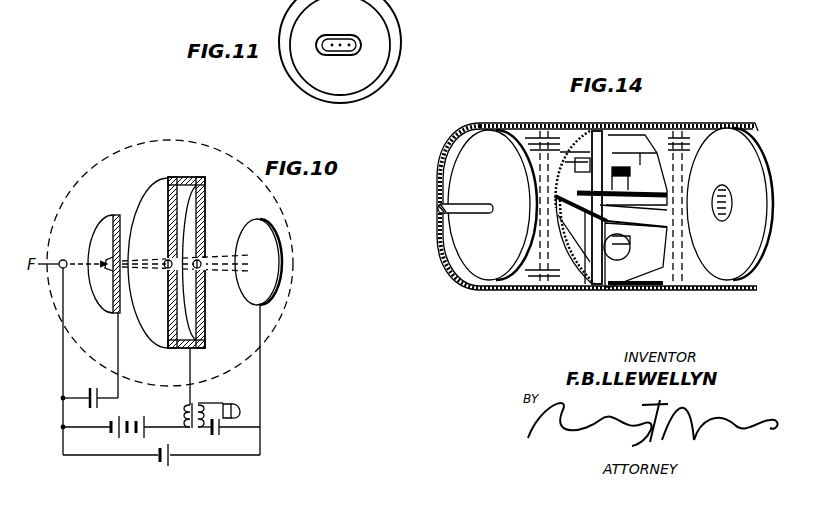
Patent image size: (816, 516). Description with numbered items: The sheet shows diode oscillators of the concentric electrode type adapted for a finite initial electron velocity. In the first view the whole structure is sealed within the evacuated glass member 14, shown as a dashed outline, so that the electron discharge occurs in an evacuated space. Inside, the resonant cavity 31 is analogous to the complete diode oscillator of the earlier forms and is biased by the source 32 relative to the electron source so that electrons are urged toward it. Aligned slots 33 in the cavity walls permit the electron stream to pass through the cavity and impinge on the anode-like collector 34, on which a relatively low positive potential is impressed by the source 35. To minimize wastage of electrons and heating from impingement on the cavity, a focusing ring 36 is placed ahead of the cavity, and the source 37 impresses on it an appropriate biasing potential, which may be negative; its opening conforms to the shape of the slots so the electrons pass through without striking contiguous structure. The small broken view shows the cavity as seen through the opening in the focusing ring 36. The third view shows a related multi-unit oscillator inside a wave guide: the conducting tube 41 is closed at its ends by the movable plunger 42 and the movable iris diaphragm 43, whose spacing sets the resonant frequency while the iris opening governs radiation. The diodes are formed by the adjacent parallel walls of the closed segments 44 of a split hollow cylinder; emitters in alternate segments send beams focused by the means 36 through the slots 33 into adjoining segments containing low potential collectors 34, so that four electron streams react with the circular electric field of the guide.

In FIG. 10, the evacuated glass member 14 is at (291, 283).
In FIG. 10, the resonant cavity 31 is at (205, 203).
In FIG. 10, the biasing source 32 is at (146, 426).
In FIG. 10, the aligned slots 33 is at (175, 268).
In FIG. 14, the aligned slots 33 is at (585, 188).
In FIG. 10, the anode-like collector 34 is at (252, 293).
In FIG. 14, the anode-like collector 34 is at (580, 215).
In FIG. 10, the collector potential source 35 is at (171, 449).
In FIG. 10, the focusing ring 36 is at (107, 228).
In FIG. 11, the focusing ring 36 is at (375, 25).
In FIG. 14, the focusing ring 36 is at (594, 131).
In FIG. 10, the focusing ring biasing source 37 is at (90, 408).
In FIG. 14, the conducting tube 41 is at (512, 128).
In FIG. 14, the movable plunger 42 is at (462, 240).
In FIG. 14, the movable iris diaphragm 43 is at (742, 262).
In FIG. 14, the closed segments of split hollow cylinder 44 is at (538, 132).